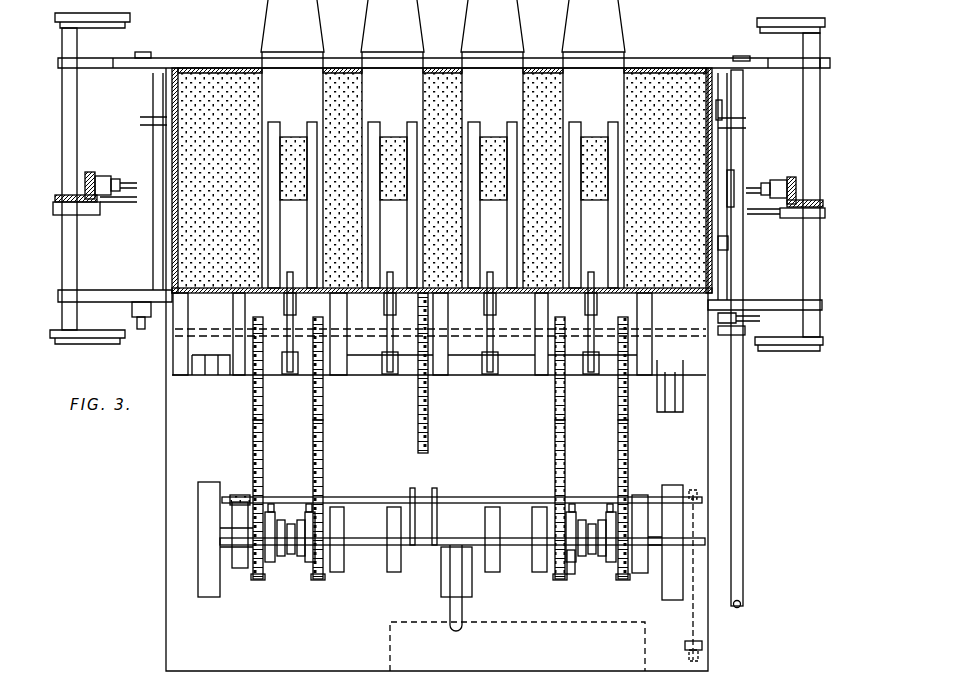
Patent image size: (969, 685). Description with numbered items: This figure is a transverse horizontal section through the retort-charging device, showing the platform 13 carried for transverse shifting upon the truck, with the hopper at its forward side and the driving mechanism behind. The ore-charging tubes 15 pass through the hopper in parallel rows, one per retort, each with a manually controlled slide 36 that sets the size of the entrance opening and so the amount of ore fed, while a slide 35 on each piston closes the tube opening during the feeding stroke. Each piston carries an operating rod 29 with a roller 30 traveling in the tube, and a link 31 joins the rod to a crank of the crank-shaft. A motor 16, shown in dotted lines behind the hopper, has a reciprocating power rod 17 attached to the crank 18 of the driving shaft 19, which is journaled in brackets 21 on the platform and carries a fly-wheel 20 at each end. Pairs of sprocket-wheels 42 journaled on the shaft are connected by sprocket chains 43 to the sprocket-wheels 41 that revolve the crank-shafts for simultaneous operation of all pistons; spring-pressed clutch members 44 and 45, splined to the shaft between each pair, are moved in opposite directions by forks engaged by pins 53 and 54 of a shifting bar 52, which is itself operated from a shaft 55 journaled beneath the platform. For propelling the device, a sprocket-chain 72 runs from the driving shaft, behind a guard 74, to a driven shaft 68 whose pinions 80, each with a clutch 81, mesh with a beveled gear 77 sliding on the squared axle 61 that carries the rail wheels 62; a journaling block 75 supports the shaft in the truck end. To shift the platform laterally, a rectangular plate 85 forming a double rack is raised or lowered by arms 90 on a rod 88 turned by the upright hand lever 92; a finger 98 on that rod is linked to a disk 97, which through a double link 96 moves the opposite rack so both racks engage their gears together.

The platform 13 is at (444, 361).
The ore-charging tube 15 is at (443, 144).
The motor 16 is at (388, 647).
The reciprocating power rod 17 is at (463, 615).
The crank 18 is at (441, 580).
The driving shaft 19 is at (364, 538).
The fly-wheel 20 is at (208, 482).
The bracket 21 is at (337, 507).
The operating rod 29 is at (296, 310).
The roller 30 is at (496, 310).
The link 31 is at (286, 345).
The slide 35 is at (141, 330).
The manually controlled slide 36 is at (443, 205).
The sprocket-wheel 41 is at (312, 394).
The sprocket-wheel 42 is at (316, 582).
The sprocket chain 43 is at (312, 440).
The clutch member 44 is at (556, 574).
The clutch member 45 is at (634, 568).
The shifting bar 52 is at (358, 497).
The pin 53 is at (305, 508).
The pin 54 is at (272, 504).
The shaft 55 is at (700, 630).
The axle 61 is at (807, 130).
The wheel 62 is at (757, 27).
The driven shaft 68 is at (765, 214).
The sprocket-chain 72 is at (428, 424).
The guard 74 is at (437, 488).
The journaling block 75 is at (735, 175).
The beveled gear 77 is at (796, 210).
The pinion 80 is at (787, 180).
The clutch 81 is at (104, 174).
The rectangular plate 85 is at (722, 150).
The rod 88 is at (743, 288).
The arm 90 is at (728, 245).
The hand lever 92 is at (742, 604).
The double link 96 is at (660, 336).
The disk 97 is at (751, 336).
The finger 98 is at (760, 326).